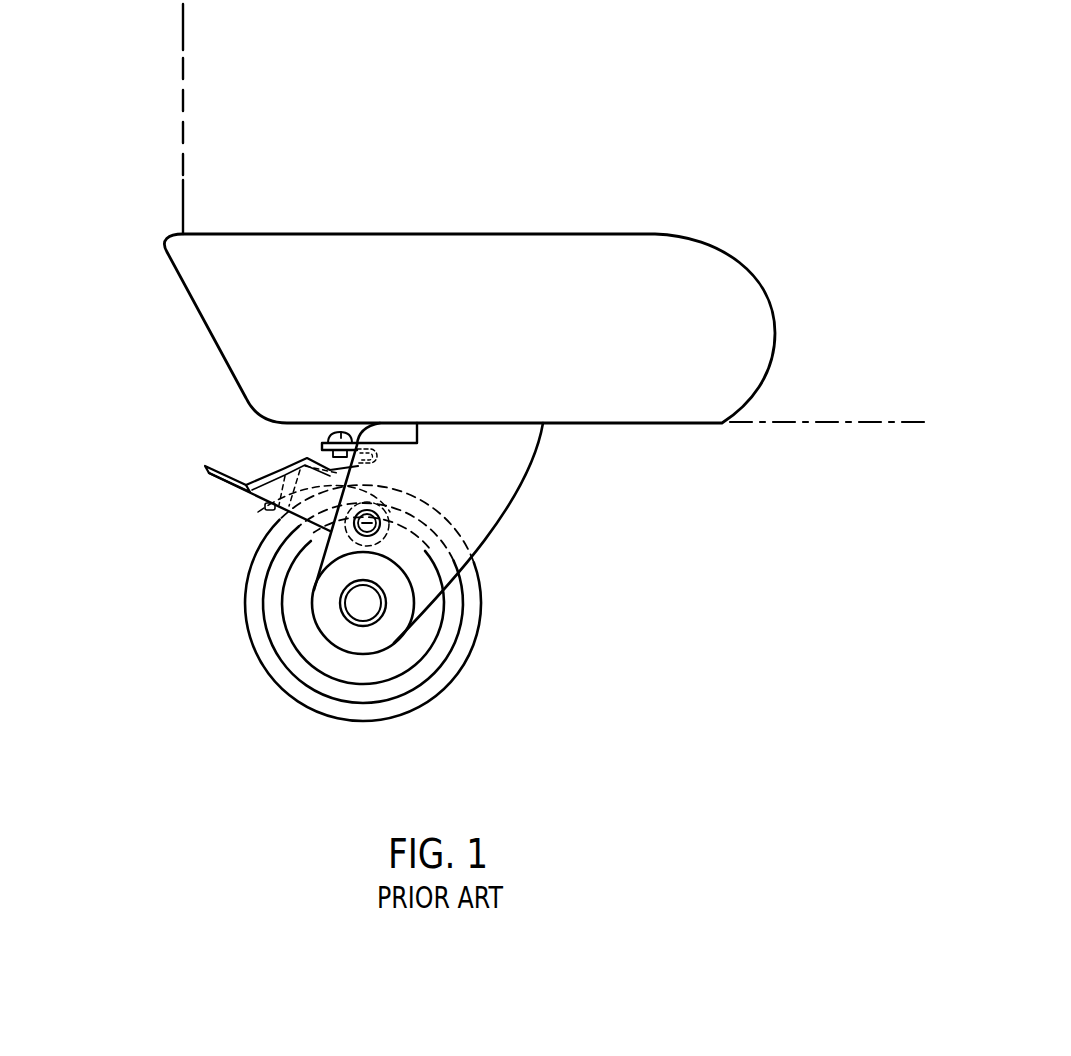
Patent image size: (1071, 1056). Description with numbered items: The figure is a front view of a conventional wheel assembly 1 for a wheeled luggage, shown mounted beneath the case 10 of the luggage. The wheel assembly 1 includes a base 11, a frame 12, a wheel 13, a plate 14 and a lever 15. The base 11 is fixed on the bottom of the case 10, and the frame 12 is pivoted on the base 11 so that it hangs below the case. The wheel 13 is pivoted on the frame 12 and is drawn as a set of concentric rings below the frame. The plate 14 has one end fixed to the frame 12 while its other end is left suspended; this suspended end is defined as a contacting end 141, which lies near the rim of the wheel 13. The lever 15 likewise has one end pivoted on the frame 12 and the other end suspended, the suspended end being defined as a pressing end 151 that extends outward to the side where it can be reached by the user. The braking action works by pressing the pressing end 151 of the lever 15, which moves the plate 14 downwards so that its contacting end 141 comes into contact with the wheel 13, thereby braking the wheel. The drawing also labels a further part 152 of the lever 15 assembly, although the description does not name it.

The wheel assembly 1 is at (118, 194).
The case 10 is at (183, 29).
The base 11 is at (247, 299).
The frame 12 is at (500, 485).
The wheel 13 is at (468, 657).
The plate 14 is at (265, 506).
The contacting end 141 is at (280, 487).
The lever 15 is at (102, 402).
The pressing end 151 is at (207, 476).
The brake pad 152 is at (280, 467).